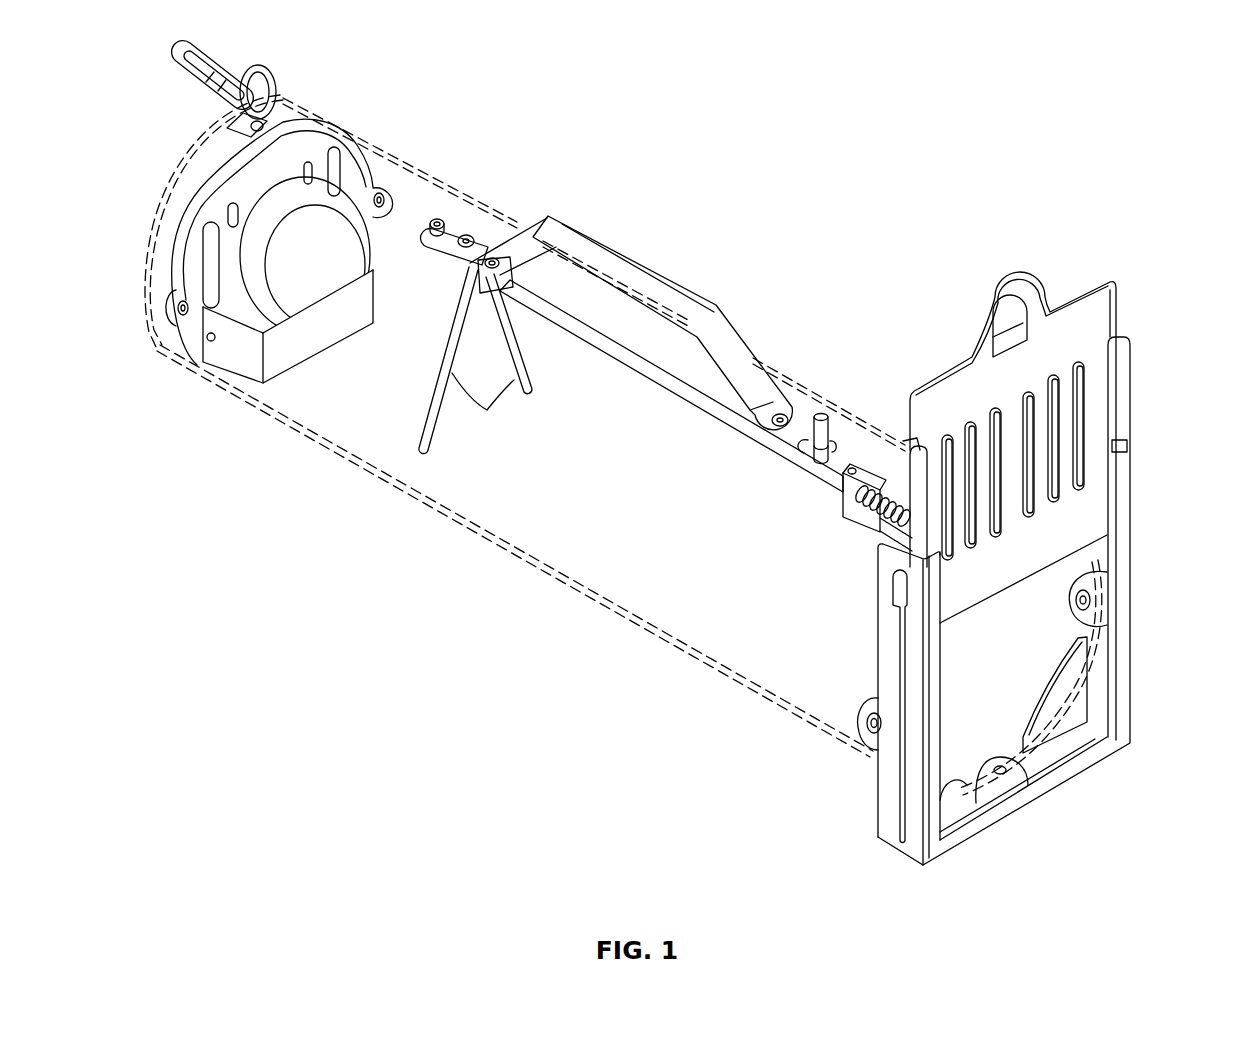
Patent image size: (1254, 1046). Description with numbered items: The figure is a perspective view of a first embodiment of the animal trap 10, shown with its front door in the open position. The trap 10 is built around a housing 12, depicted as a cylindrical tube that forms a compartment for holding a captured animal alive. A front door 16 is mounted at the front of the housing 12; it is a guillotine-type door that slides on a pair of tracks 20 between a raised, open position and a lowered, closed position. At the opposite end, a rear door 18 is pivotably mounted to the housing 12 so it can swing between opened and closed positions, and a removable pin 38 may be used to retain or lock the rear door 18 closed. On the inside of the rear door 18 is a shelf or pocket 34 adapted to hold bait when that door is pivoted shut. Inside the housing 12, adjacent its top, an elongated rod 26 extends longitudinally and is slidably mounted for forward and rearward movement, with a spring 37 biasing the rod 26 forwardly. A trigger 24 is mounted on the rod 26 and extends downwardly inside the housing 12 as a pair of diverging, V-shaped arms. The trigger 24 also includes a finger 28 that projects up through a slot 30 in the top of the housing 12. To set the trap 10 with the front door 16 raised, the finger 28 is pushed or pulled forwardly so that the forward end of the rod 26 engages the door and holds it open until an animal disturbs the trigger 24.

The animal trap 10 is at (532, 199).
The housing 12 is at (403, 153).
The front door 16 is at (1107, 295).
The rear door 18 is at (333, 137).
The tracks 20 is at (1128, 482).
The trigger 24 is at (475, 360).
The elongated rod 26 is at (667, 378).
The finger 28 is at (823, 417).
The slot 30 is at (805, 447).
The shelf or pocket 34 is at (330, 327).
The spring 37 is at (864, 520).
The removable pin 38 is at (277, 103).